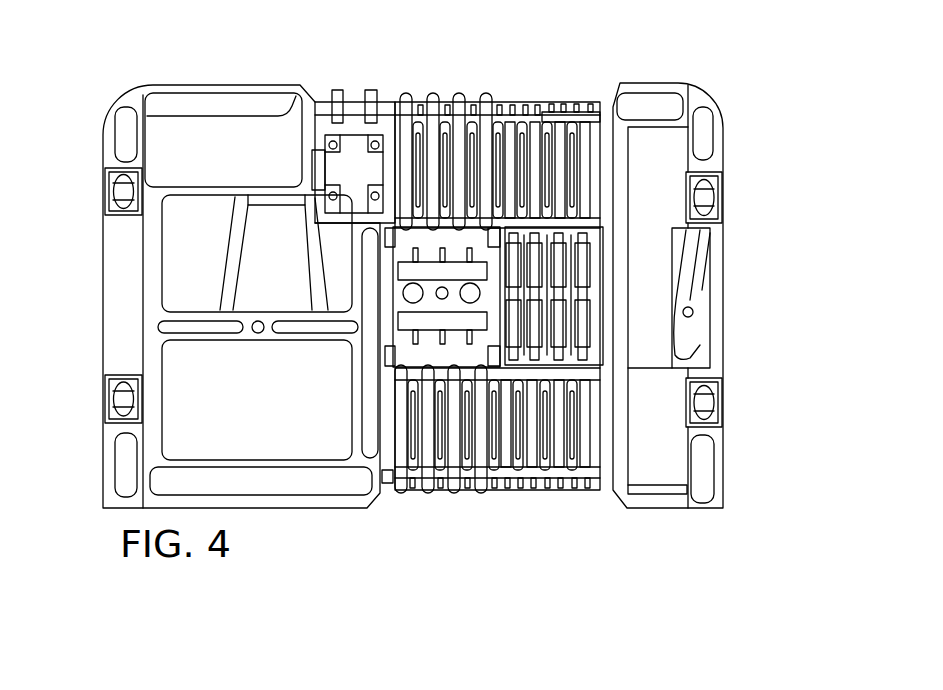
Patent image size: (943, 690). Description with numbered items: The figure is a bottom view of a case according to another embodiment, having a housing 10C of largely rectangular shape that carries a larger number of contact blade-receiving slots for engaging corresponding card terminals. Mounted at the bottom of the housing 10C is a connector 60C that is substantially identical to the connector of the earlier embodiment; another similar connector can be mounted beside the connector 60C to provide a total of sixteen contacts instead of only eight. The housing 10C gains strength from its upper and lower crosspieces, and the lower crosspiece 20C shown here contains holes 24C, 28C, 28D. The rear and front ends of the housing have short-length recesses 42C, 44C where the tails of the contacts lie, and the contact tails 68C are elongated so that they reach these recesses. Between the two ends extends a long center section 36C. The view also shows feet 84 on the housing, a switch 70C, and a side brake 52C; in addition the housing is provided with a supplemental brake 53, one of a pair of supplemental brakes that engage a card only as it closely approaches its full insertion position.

The housing 10C is at (733, 239).
The feet 84 is at (125, 188).
The hole 24C is at (630, 142).
The lower crosspiece 20C is at (655, 460).
The side brake 52C is at (695, 333).
The supplemental brake 53 is at (272, 233).
The hole 28C is at (207, 198).
The hole 28D is at (215, 457).
The contact tails 68C is at (395, 407).
The switch 70C is at (353, 125).
The recess 44C is at (530, 102).
The connector 60C is at (389, 328).
The long center section 36C is at (586, 468).
The recess 42C is at (513, 490).